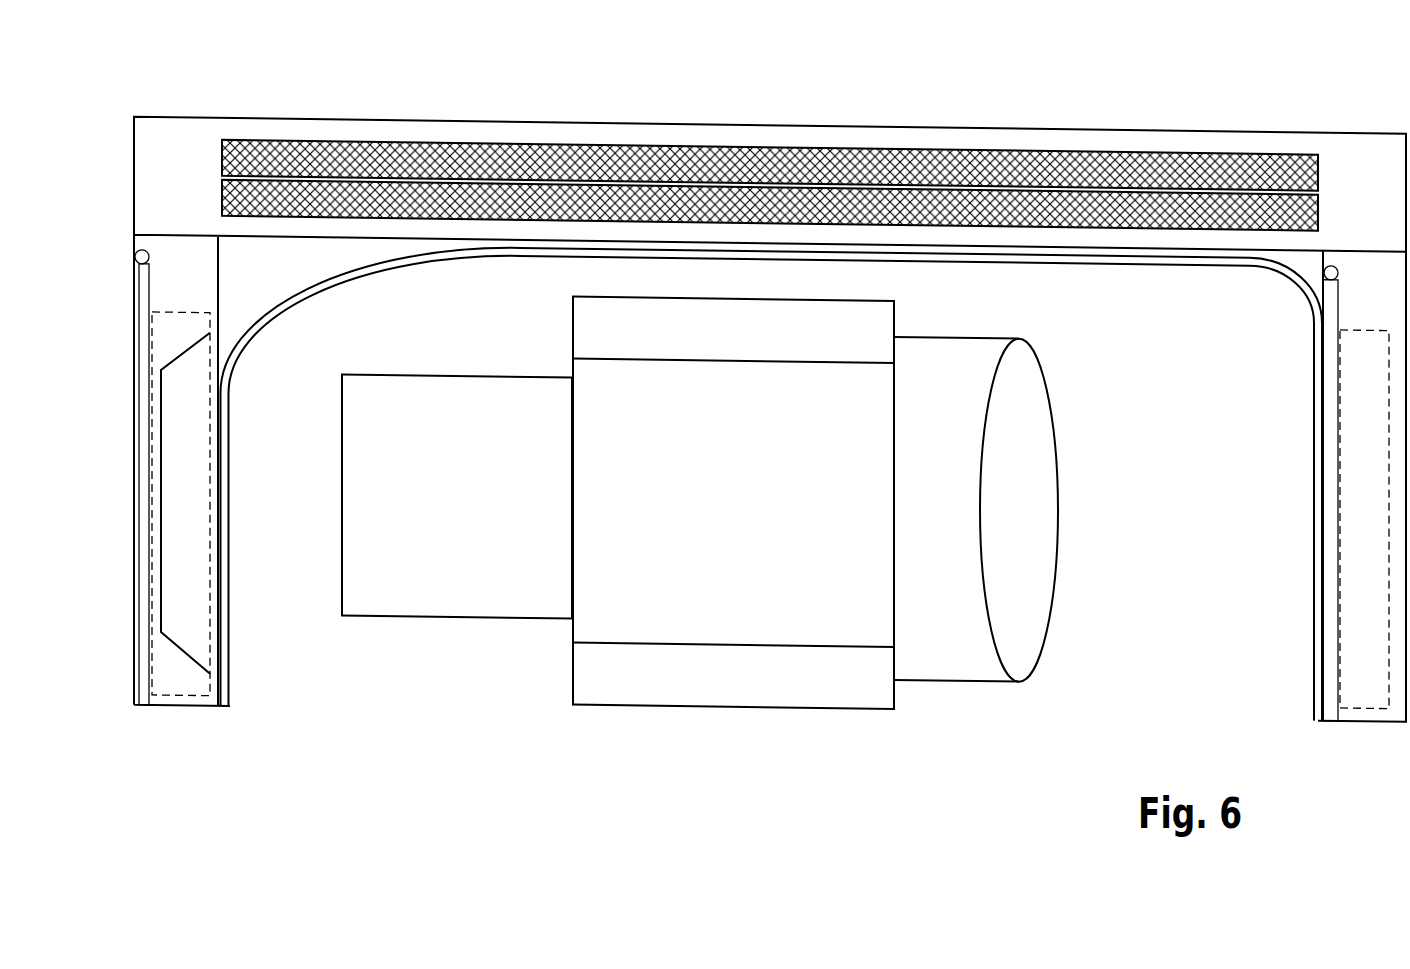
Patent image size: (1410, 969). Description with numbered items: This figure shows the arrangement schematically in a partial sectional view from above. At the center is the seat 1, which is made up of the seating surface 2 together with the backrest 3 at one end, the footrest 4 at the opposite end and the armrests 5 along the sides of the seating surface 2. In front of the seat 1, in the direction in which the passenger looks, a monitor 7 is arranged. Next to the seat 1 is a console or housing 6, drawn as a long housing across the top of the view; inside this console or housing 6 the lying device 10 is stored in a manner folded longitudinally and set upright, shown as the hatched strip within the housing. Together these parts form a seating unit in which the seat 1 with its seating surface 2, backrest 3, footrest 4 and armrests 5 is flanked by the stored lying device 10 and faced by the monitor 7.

The seat 1 is at (700, 564).
The seating surface 2 is at (590, 625).
The backrest 3 is at (947, 667).
The footrest 4 is at (395, 605).
The armrests 5 is at (667, 693).
The console or housing 6 is at (897, 137).
The monitor 7 is at (199, 519).
The lying device 10 is at (1042, 153).